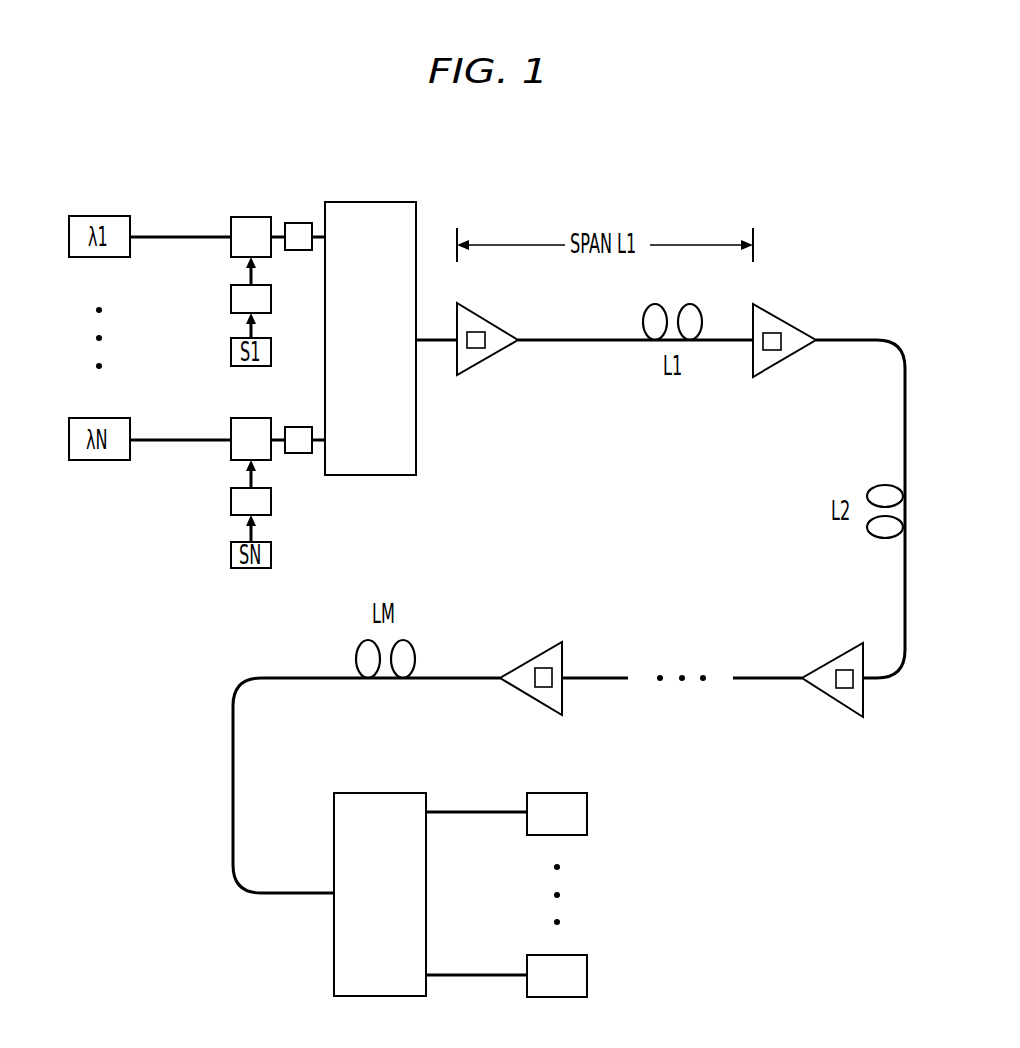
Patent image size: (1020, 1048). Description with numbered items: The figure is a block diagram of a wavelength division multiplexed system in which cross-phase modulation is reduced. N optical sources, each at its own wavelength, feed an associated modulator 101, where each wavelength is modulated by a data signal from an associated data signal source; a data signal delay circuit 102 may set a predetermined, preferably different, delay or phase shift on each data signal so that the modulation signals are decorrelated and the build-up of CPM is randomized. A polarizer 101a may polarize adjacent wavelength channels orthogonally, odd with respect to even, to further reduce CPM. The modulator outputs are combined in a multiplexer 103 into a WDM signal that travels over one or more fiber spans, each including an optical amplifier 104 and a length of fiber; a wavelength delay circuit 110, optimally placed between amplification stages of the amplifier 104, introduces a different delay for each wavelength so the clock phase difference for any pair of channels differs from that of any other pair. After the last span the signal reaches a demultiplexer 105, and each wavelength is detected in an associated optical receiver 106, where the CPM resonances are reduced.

The modulator 101 is at (231, 224).
The polarizer 101a is at (297, 223).
The data signal delay circuit 102 is at (231, 304).
The multiplexer 103 is at (367, 202).
The optical amplifier 104 is at (490, 320).
The demultiplexer 105 is at (378, 793).
The optical receiver 106 is at (587, 815).
The wavelength delay circuit 110 is at (476, 348).